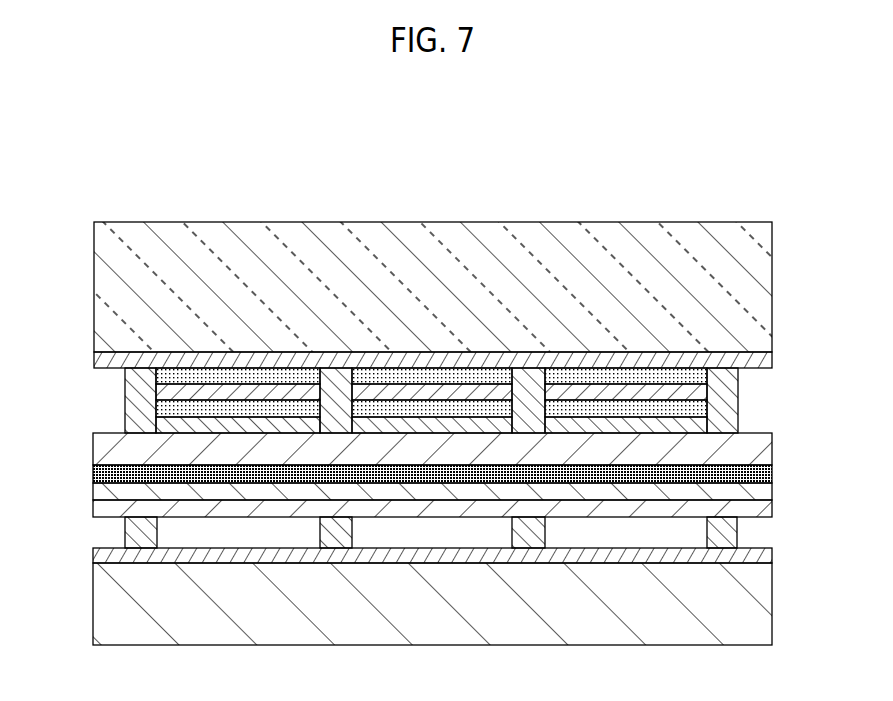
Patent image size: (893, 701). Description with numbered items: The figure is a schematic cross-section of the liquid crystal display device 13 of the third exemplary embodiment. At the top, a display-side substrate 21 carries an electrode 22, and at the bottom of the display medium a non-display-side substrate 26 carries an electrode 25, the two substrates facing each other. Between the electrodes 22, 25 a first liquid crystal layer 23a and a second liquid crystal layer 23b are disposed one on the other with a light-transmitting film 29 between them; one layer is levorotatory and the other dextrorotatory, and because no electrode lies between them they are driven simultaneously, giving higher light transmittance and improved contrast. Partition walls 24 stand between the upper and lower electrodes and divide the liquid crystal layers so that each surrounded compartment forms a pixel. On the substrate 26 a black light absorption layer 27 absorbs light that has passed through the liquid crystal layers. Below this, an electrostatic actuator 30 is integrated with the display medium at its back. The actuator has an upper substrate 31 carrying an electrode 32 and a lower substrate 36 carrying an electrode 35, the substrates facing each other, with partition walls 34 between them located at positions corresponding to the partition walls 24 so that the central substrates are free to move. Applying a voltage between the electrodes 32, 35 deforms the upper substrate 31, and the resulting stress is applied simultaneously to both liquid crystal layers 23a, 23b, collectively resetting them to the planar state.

The liquid crystal display device 13 is at (742, 183).
The substrate 21 is at (765, 258).
The electrode 22 is at (765, 360).
The first liquid crystal layer 23a is at (127, 382).
The partition walls 24 is at (133, 392).
The second liquid crystal layer 23b is at (127, 415).
The electrode 25 is at (738, 422).
The substrate 26 is at (765, 452).
The light absorption layer 27 is at (770, 473).
The light-transmitting film 29 is at (740, 390).
The electrostatic actuator 30 is at (82, 485).
The substrate 31 is at (765, 507).
The electrode 32 is at (765, 490).
The partition walls 34 is at (740, 527).
The electrode 35 is at (765, 557).
The substrate 36 is at (765, 612).